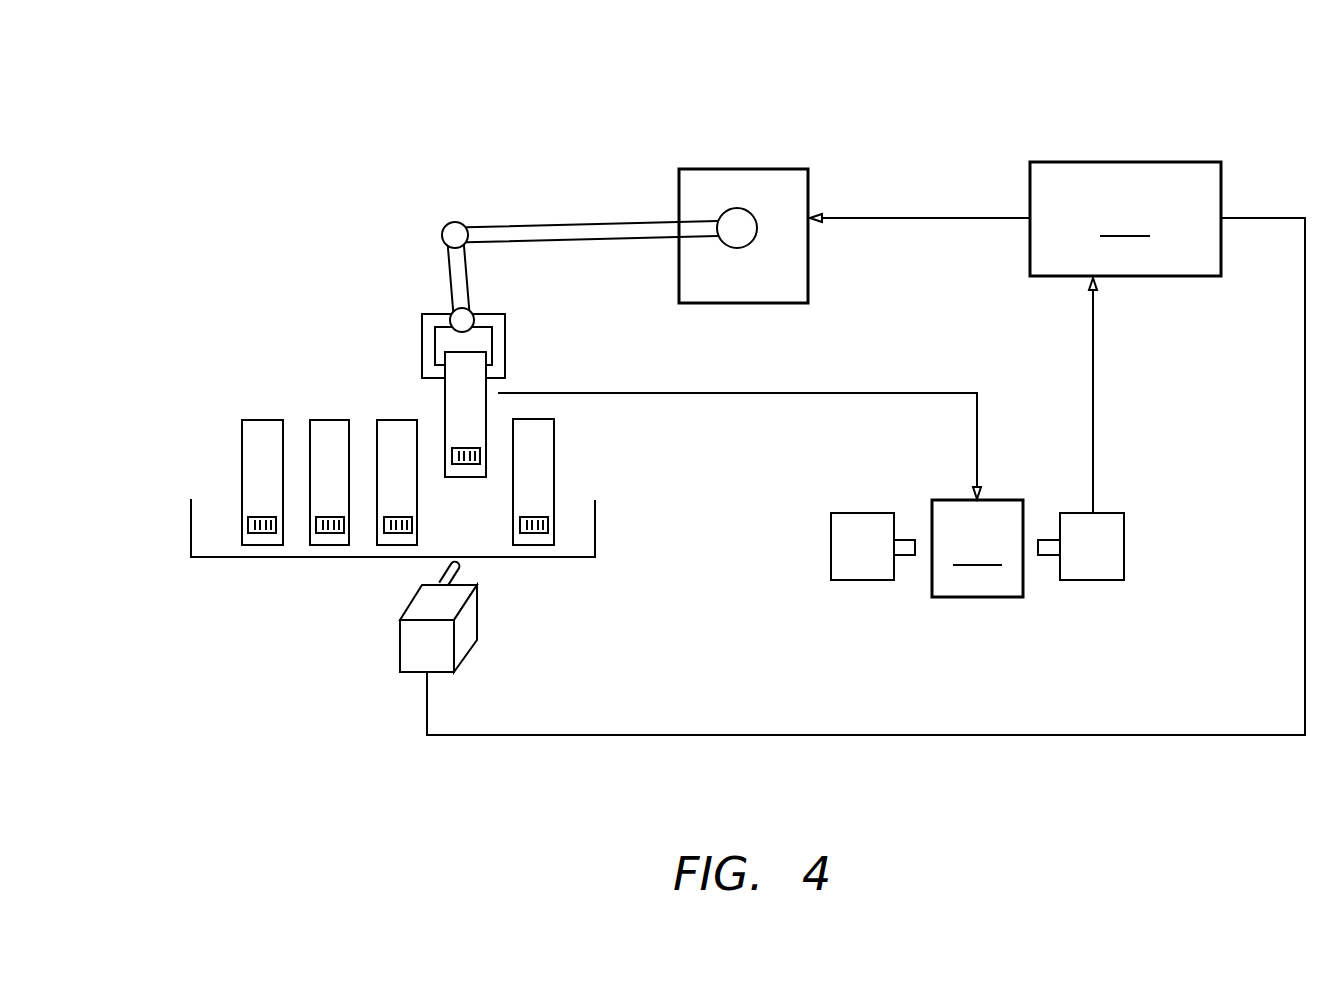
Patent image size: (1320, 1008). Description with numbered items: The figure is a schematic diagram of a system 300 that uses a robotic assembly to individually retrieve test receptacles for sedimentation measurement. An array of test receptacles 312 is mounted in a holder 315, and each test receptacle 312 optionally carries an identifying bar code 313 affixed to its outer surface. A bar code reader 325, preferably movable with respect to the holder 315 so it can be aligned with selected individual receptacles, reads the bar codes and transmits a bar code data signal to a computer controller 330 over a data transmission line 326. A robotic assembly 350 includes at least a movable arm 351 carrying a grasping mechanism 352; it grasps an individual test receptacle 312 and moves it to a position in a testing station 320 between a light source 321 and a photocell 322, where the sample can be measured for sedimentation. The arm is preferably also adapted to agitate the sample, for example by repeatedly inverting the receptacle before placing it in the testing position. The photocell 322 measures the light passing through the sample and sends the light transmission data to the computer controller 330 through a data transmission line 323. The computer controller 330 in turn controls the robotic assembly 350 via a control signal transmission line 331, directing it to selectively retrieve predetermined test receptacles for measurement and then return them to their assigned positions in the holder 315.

The system 300 is at (477, 120).
The test receptacle 312 is at (219, 447).
The identifying bar code 313 is at (480, 456).
The holder 315 is at (188, 530).
The testing station 320 is at (977, 548).
The light source 321 is at (858, 582).
The photocell 322 is at (1102, 553).
The data transmission line 323 is at (1093, 352).
The bar code reader 325 is at (473, 652).
The data transmission line 326 is at (960, 735).
The computer controller 330 is at (1125, 219).
The control signal transmission line 331 is at (918, 218).
The robotic assembly 350 is at (757, 168).
The movable arm 351 is at (590, 222).
The grasping mechanism 352 is at (435, 313).